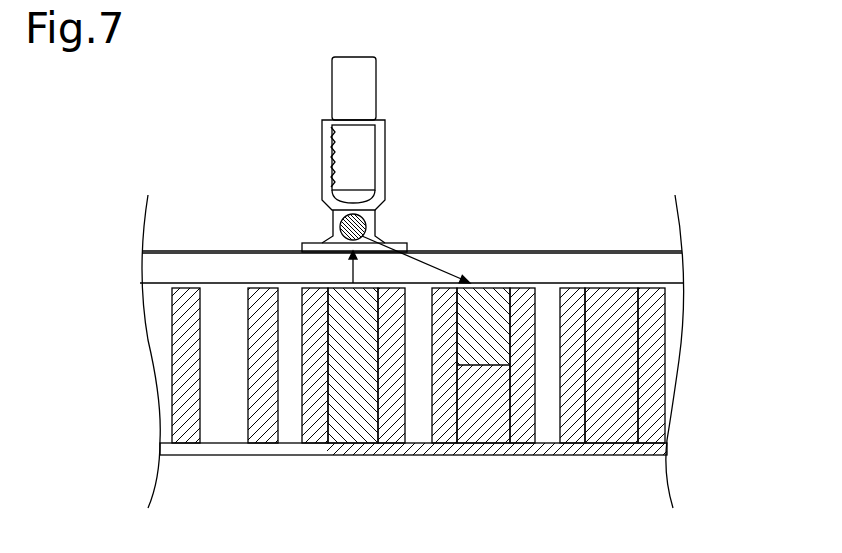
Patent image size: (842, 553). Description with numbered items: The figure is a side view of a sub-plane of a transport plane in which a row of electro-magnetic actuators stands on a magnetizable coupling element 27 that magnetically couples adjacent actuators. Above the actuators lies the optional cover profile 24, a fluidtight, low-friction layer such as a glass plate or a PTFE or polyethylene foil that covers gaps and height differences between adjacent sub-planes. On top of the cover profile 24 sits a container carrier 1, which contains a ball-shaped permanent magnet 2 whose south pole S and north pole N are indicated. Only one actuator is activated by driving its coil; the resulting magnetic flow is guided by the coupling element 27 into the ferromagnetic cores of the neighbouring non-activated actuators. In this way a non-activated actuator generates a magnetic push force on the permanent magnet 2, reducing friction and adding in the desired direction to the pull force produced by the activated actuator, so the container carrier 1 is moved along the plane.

The container carrier 1 is at (312, 105).
The south pole of magnet S is at (332, 207).
The permanent magnet 2 is at (332, 220).
The north pole of magnet N is at (332, 238).
The cover profile 24 is at (540, 251).
The magnetizable coupling element 27 is at (288, 447).